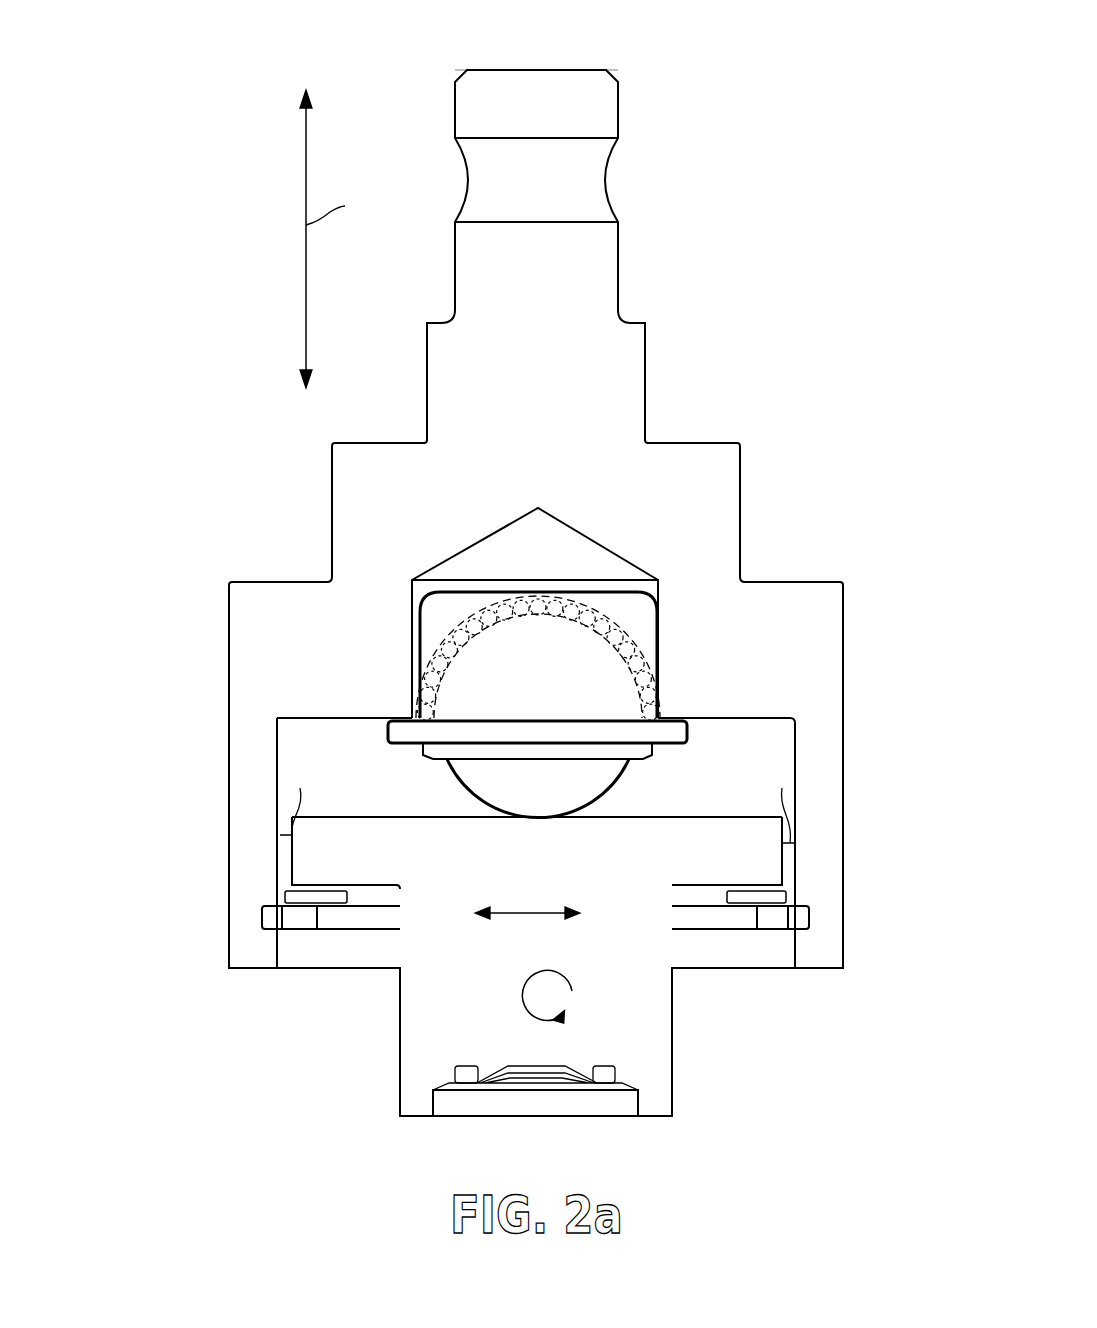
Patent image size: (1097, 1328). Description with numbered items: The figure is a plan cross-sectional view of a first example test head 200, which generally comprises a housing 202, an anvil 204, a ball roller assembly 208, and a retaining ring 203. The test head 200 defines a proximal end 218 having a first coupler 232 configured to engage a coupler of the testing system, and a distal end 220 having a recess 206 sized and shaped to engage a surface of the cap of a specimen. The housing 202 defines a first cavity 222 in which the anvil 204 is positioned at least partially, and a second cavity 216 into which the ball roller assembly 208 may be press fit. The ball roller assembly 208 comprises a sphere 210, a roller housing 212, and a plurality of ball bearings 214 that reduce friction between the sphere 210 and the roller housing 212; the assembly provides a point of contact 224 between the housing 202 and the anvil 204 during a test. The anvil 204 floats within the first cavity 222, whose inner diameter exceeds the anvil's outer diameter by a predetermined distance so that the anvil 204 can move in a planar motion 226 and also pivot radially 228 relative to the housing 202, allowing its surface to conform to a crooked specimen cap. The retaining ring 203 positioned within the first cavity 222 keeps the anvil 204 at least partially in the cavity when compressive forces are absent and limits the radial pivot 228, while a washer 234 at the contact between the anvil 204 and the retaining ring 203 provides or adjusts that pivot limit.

The test head 200 is at (168, 168).
The housing 202 is at (742, 520).
The retaining ring 203 is at (720, 935).
The anvil 204 is at (400, 998).
The recess 206 is at (468, 1118).
The ball roller assembly 208 is at (375, 672).
The sphere 210 is at (615, 780).
The roller housing 212 is at (410, 746).
The ball bearings 214 is at (567, 620).
The second cavity 216 is at (660, 597).
The proximal end 218 is at (752, 48).
The distal end 220 is at (752, 1118).
The first cavity 222 is at (718, 716).
The point of contact 224 is at (533, 820).
The planar motion 226 is at (542, 916).
The radial pivot 228 is at (530, 1000).
The first coupler 232 is at (620, 118).
The washer 234 is at (795, 888).